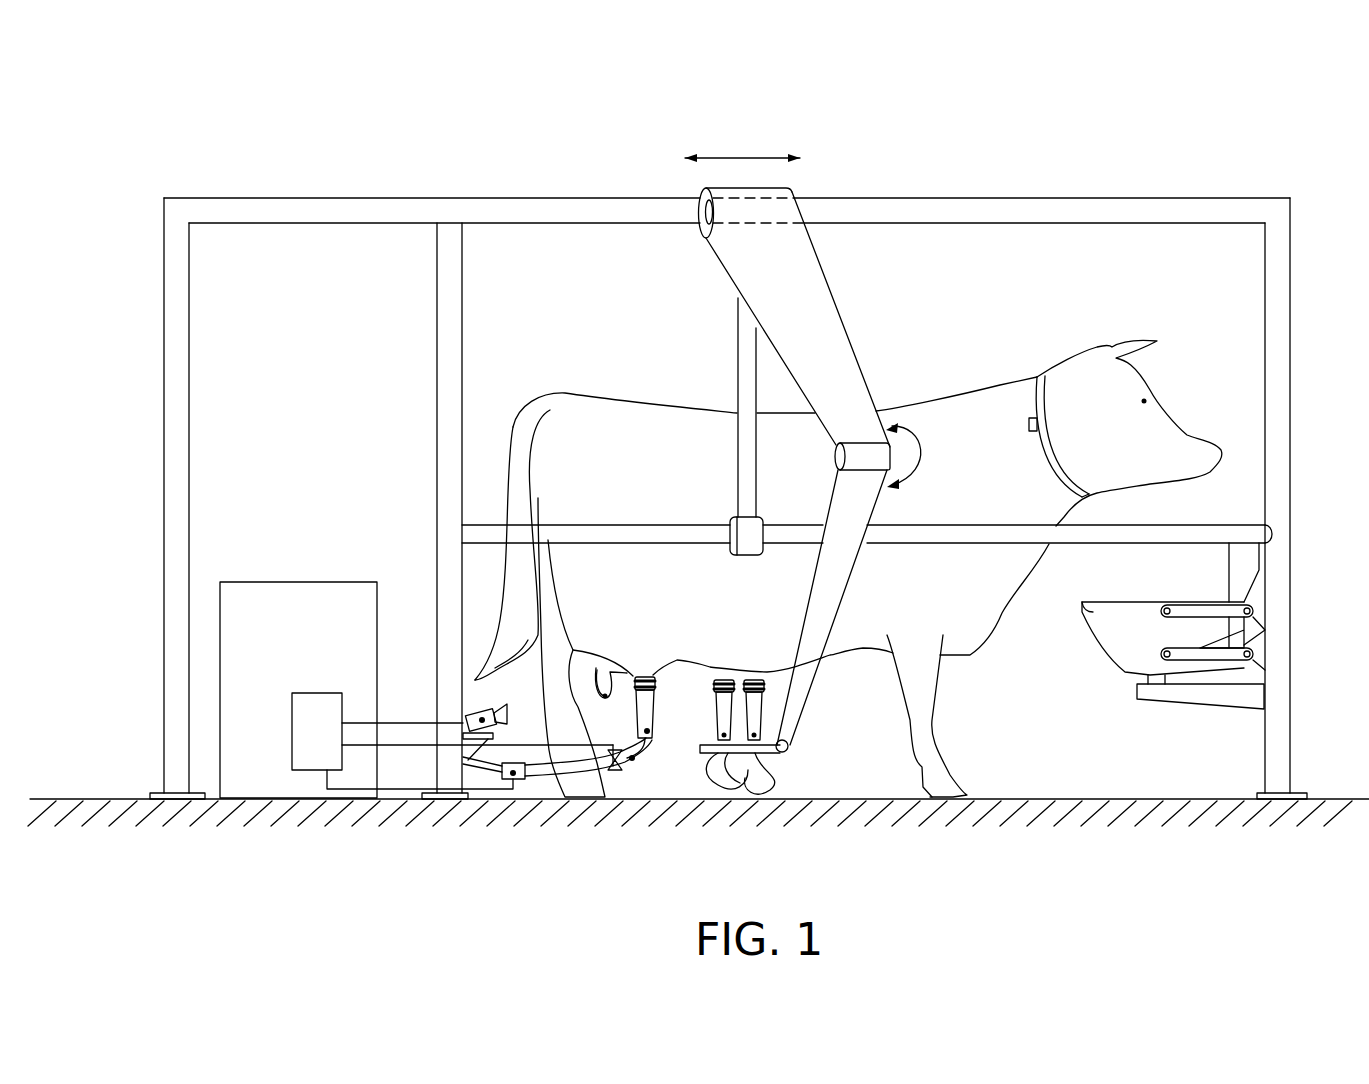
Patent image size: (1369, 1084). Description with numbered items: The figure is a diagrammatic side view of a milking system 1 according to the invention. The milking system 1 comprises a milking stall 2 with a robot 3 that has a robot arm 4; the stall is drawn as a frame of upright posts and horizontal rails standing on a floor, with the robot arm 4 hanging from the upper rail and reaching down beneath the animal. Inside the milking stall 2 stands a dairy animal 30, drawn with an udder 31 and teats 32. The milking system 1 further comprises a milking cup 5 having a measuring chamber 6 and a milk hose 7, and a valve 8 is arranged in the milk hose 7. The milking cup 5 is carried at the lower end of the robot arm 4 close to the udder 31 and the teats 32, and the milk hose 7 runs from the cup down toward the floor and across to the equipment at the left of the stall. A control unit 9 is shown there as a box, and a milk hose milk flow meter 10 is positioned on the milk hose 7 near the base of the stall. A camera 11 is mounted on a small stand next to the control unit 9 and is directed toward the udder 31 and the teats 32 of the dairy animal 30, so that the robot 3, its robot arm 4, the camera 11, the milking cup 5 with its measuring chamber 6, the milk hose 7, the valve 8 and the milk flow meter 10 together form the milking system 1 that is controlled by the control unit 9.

The milking system 1 is at (1296, 139).
The milking stall 2 is at (622, 198).
The robot 3 is at (294, 582).
The robot arm 4 is at (804, 667).
The milking cup 5 is at (670, 706).
The measuring chamber 6 is at (647, 733).
The milk hose 7 is at (634, 762).
The valve 8 is at (615, 772).
The control unit 9 is at (317, 693).
The milk hose milk flow meter 10 is at (513, 773).
The camera 11 is at (482, 720).
The dairy animal 30 is at (673, 476).
The udder 31 is at (629, 672).
The teats 32 is at (603, 695).